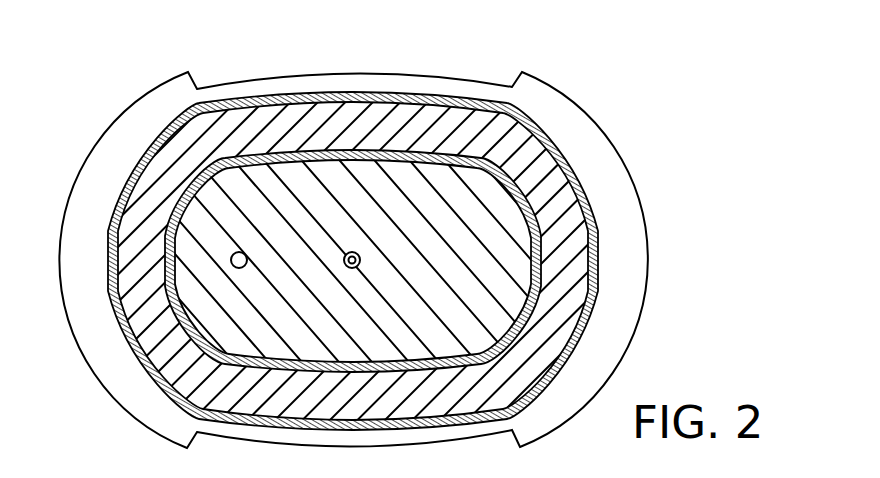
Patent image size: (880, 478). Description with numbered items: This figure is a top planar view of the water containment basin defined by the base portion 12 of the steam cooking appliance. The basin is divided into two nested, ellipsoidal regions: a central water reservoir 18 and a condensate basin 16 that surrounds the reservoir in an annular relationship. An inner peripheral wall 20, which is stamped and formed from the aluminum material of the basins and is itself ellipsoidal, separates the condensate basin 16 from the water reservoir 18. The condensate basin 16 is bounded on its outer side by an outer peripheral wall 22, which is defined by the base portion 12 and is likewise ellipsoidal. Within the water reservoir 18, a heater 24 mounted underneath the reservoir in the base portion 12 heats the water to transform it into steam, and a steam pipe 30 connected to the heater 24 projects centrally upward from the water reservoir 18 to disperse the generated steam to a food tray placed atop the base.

The base portion 12 is at (622, 158).
The condensate basin 16 is at (549, 184).
The water reservoir 18 is at (503, 278).
The inner peripheral wall 20 is at (598, 215).
The outer peripheral wall 22 is at (595, 308).
The heater 24 is at (238, 251).
The steam pipe 30 is at (352, 251).